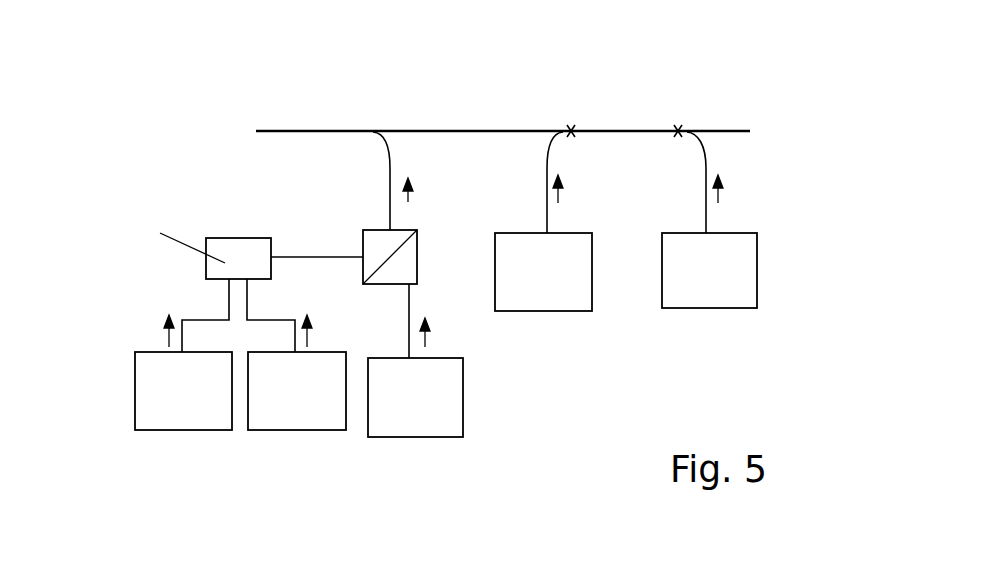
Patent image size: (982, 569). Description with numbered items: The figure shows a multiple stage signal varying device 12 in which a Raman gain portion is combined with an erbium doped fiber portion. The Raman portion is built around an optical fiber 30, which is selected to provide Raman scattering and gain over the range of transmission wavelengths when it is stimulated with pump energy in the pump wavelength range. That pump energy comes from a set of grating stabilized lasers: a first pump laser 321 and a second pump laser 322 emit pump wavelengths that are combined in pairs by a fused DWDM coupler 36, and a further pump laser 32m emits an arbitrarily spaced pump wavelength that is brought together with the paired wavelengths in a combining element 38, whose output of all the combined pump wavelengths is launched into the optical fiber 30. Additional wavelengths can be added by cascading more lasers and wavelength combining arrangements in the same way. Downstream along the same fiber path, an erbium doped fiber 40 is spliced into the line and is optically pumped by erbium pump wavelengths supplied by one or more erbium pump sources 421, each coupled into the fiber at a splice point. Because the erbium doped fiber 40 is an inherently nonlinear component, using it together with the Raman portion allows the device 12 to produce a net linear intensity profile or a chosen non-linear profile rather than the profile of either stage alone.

The signal varying device 12 is at (641, 57).
The optical fiber 30 is at (317, 131).
The erbium doped fiber 40 is at (642, 131).
The fused DWDM coupler 36 is at (236, 238).
The wavelength combiner 38 is at (418, 253).
The grating stabilized laser 321 is at (158, 430).
The grating stabilized laser 322 is at (310, 430).
The grating stabilized laser 32m is at (428, 437).
The erbium pump source 421 is at (592, 265).